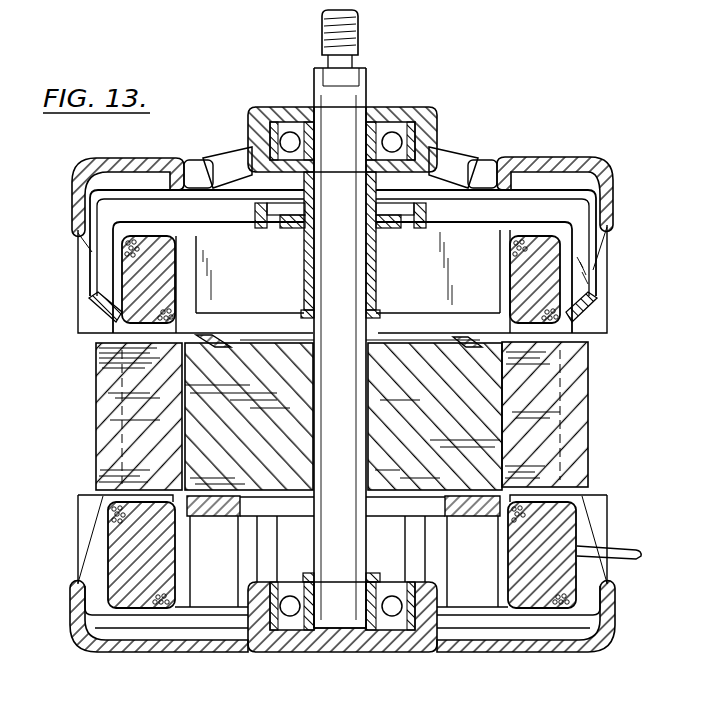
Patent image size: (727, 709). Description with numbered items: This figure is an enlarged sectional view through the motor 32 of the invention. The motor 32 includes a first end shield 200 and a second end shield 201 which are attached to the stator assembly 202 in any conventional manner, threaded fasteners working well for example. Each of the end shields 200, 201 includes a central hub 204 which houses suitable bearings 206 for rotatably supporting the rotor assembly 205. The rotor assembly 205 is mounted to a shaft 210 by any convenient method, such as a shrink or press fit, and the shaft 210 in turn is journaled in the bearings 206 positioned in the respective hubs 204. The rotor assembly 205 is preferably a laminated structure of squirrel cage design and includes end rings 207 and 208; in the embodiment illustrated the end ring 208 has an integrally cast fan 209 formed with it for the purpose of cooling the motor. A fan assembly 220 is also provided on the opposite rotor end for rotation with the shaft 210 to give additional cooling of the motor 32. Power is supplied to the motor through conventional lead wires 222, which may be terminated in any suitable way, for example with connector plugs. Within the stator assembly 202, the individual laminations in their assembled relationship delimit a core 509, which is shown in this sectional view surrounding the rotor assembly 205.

The motor 32 is at (513, 94).
The first end shield 200 is at (614, 174).
The second end shield 201 is at (584, 650).
The stator assembly 202 is at (603, 449).
The central hub 204 is at (250, 113).
The rotor assembly 205 is at (497, 397).
The bearings 206 is at (288, 130).
The end ring 207 is at (200, 334).
The end ring 208 is at (190, 503).
The integrally cast fan 209 is at (217, 598).
The shaft 210 is at (359, 21).
The fan assembly 220 is at (78, 247).
The lead wires 222 is at (634, 546).
The core 509 is at (103, 426).